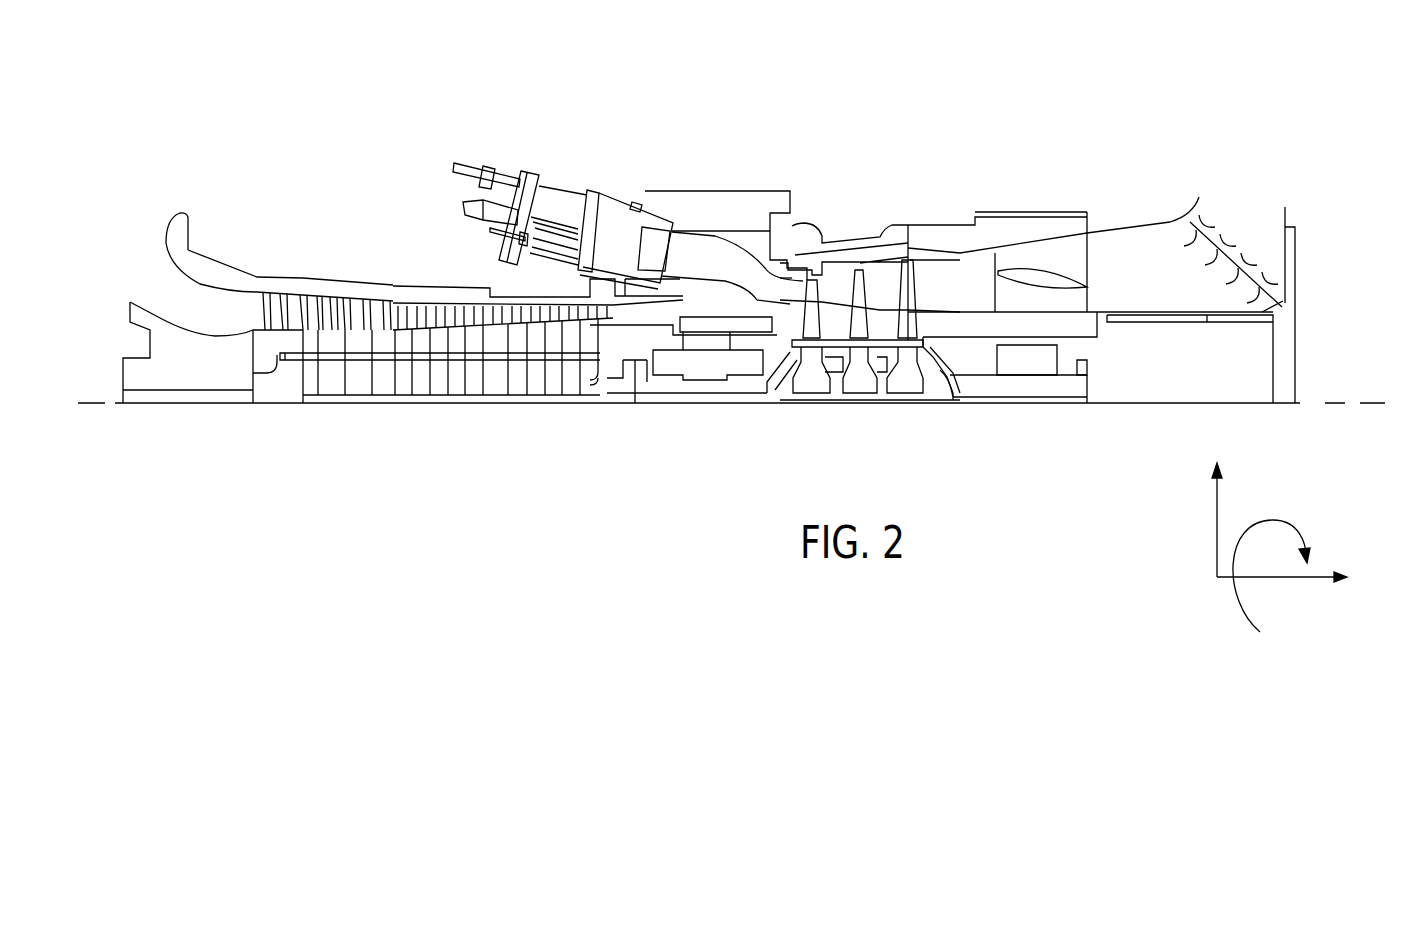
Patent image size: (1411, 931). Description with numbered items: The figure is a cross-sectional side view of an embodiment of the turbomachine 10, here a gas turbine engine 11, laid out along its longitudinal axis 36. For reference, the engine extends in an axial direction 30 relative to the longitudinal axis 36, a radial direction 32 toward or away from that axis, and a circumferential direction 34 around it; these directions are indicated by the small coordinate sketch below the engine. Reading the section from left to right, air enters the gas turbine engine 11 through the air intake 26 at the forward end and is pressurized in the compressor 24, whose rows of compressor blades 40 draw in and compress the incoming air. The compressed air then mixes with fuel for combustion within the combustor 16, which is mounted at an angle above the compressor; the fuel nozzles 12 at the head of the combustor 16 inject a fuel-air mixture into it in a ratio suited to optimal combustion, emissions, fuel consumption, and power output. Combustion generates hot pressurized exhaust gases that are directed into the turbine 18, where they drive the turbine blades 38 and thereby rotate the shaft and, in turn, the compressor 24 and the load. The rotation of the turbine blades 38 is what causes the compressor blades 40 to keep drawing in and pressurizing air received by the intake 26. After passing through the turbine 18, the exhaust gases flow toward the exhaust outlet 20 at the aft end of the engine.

The turbomachine 10 is at (430, 82).
The gas turbine engine 11 is at (732, 266).
The fuel nozzle 12 is at (530, 213).
The combustor 16 is at (747, 227).
The turbine 18 is at (1285, 180).
The exhaust outlet 20 is at (1232, 254).
The compressor 24 is at (535, 281).
The air intake 26 is at (183, 306).
The axial direction 30 is at (1275, 578).
The radial direction 32 is at (1217, 527).
The circumferential direction 34 is at (1238, 600).
The longitudinal axis 36 is at (1317, 403).
The turbine blades 38 is at (858, 280).
The compressor blades 40 is at (335, 306).